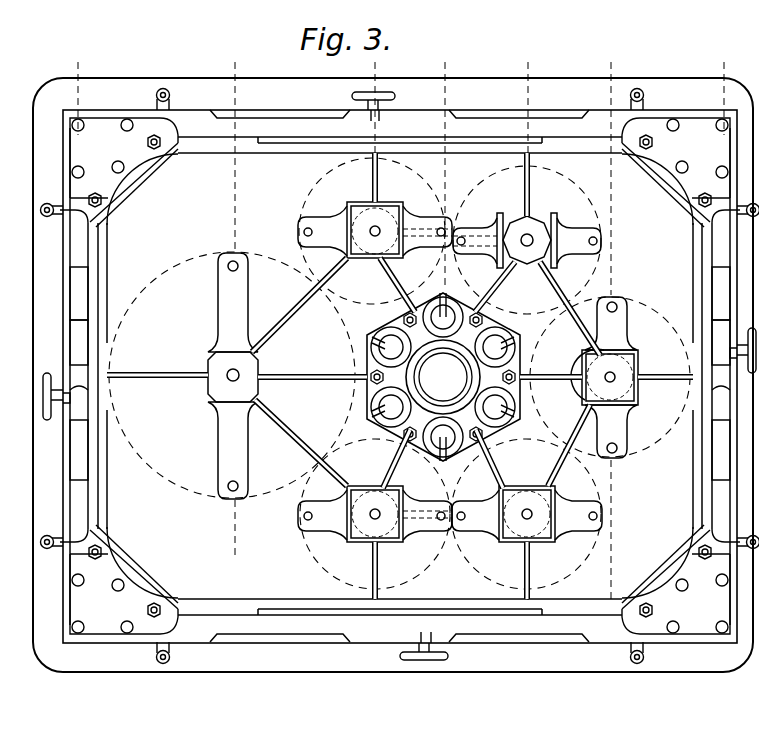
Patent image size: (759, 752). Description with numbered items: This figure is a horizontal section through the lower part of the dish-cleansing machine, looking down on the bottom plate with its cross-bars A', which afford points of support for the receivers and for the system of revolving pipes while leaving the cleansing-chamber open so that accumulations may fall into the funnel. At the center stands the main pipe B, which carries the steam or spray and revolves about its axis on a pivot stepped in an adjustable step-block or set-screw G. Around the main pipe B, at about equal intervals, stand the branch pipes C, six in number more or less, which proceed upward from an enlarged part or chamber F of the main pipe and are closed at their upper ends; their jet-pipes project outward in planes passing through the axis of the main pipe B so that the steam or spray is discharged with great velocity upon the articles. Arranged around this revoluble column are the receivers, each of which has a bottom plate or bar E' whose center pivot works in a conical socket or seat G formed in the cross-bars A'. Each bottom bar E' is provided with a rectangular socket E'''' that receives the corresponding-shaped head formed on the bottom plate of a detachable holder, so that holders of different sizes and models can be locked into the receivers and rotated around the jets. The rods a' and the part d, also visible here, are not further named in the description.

The main pipe B is at (443, 377).
The branch pipes C is at (443, 377).
The enlarged part or chamber F is at (443, 377).
The set-screw G is at (406, 309).
The bottom plate or bar E' is at (422, 373).
The rectangular socket E'''' is at (492, 372).
The cross-bars A' is at (426, 373).
The rods to frame a' is at (400, 376).
The rod d is at (572, 326).